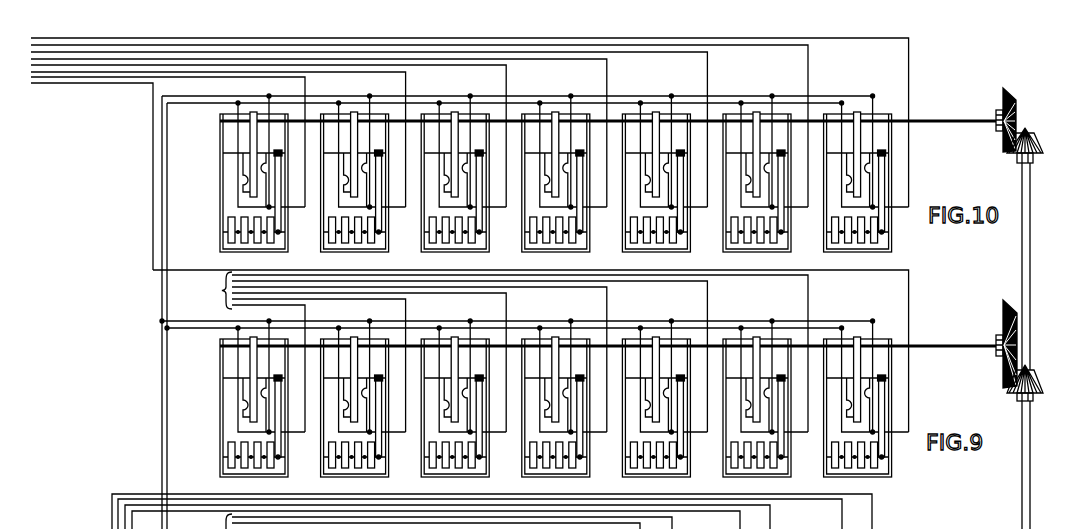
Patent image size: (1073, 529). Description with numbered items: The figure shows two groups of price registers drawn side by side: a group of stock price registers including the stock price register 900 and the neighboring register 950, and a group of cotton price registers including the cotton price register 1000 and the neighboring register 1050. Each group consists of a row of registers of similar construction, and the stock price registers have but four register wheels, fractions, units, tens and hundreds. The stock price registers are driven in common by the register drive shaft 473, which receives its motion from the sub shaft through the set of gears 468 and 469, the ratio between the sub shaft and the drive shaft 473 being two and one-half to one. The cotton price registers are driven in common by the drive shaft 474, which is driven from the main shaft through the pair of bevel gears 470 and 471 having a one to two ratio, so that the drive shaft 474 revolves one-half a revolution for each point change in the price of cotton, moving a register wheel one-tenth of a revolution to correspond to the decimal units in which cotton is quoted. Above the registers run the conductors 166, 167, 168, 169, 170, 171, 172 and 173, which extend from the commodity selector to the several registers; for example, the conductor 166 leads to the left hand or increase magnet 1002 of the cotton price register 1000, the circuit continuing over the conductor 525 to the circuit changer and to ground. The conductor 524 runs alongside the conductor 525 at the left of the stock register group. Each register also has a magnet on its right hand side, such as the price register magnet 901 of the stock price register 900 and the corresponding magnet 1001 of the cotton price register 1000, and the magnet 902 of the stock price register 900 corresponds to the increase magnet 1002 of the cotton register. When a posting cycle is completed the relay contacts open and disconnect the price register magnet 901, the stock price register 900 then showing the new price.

In FIG. 10, the conductor 166 is at (909, 82).
In FIG. 9, the conductor 167 is at (909, 312).
In FIG. 10, the conductor 168 is at (808, 82).
In FIG. 10, the conductor 169 is at (707, 82).
In FIG. 10, the conductor 170 is at (607, 82).
In FIG. 10, the conductor 171 is at (506, 82).
In FIG. 10, the conductor 172 is at (406, 82).
In FIG. 10, the conductor 173 is at (305, 82).
In FIG. 10, the drive shaft 474 is at (608, 110).
In FIG. 9, the drive shaft 473 is at (608, 336).
In FIG. 10, the bevel gear 471 is at (1006, 97).
In FIG. 10, the bevel gear 470 is at (1024, 134).
In FIG. 9, the gear 469 is at (1003, 311).
In FIG. 9, the gear 468 is at (1037, 376).
In FIG. 10, the cotton price register 1000 is at (872, 180).
In FIG. 10, the contact 1001 is at (870, 167).
In FIG. 10, the increase magnet 1002 is at (846, 181).
In FIG. 10, the relay unit 1050 is at (791, 252).
In FIG. 9, the stock price register 900 is at (870, 405).
In FIG. 9, the price register magnet 901 is at (870, 393).
In FIG. 9, the armature 902 is at (846, 406).
In FIG. 9, the relay unit 950 is at (791, 477).
In FIG. 9, the conductor 524 is at (163, 357).
In FIG. 9, the conductor 525 is at (168, 414).